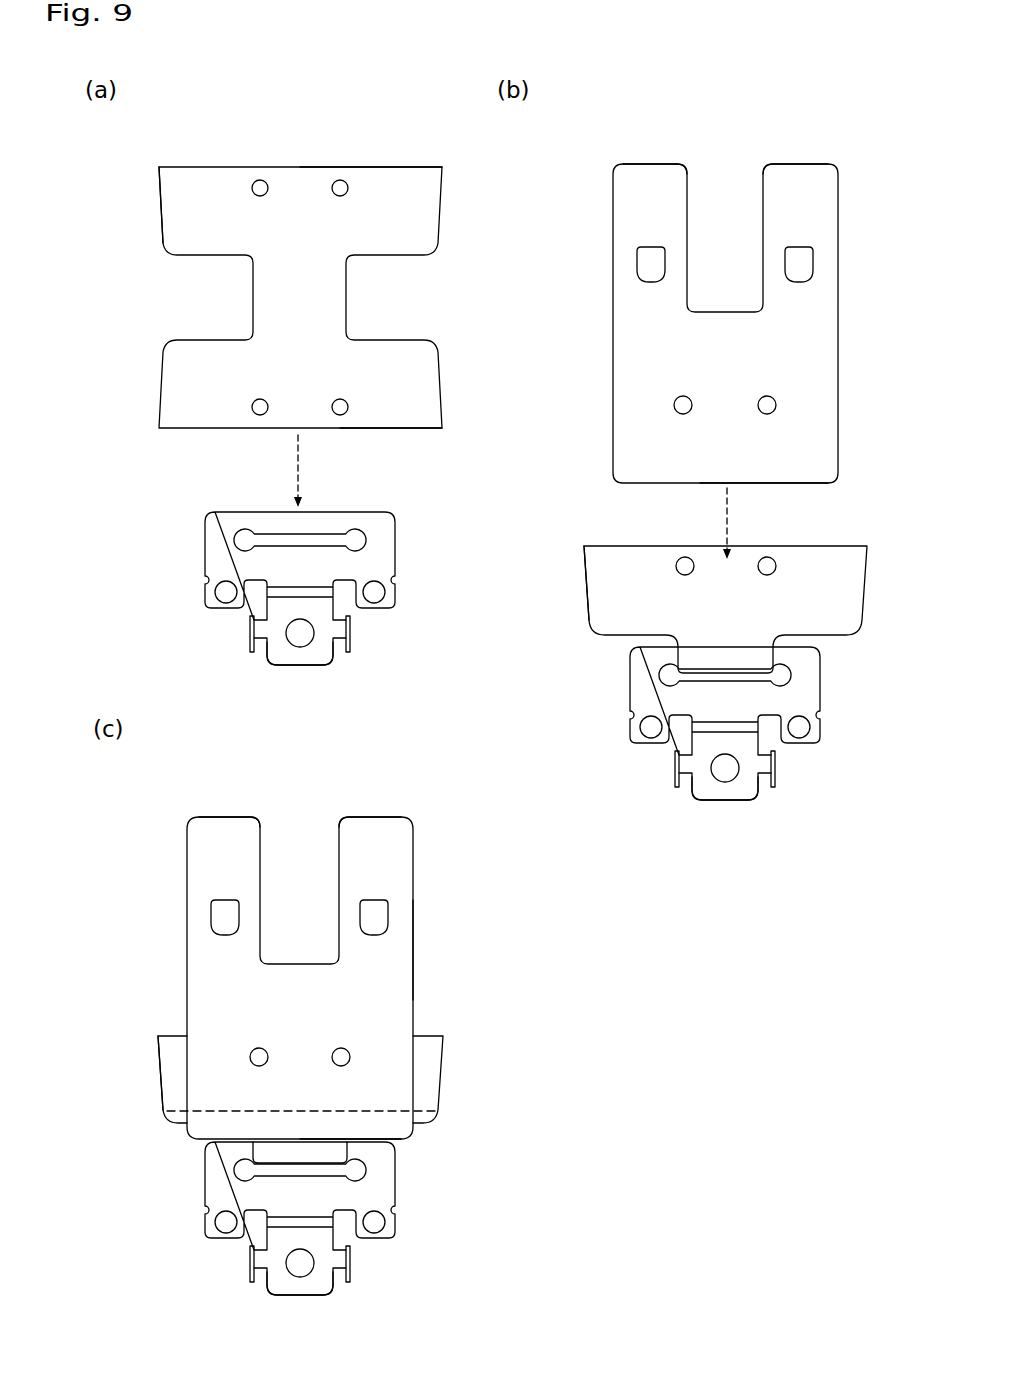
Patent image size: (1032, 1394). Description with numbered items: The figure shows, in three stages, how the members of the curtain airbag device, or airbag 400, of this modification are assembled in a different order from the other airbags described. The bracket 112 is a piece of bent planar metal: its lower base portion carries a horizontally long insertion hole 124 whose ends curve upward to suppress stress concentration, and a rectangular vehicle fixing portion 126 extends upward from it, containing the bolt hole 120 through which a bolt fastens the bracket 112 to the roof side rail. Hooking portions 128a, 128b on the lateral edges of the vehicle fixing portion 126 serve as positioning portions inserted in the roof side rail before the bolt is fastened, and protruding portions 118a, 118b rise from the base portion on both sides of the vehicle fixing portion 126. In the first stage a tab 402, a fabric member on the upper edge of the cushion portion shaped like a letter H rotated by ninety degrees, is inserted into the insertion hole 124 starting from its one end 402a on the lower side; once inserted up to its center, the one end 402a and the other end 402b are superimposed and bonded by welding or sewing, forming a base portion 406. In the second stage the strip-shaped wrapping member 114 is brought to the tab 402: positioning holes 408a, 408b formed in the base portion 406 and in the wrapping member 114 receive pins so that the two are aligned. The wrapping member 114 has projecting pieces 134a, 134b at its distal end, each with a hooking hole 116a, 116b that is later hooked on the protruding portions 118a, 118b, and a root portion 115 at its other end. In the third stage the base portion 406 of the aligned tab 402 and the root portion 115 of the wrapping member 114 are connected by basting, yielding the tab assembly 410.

The airbag 400 is at (146, 180).
The tab 402 is at (386, 166).
The one end 402a is at (390, 430).
The other end 402b is at (347, 166).
The base portion 406 is at (199, 180).
The positioning hole 408a is at (261, 180).
The positioning hole 408b is at (683, 396).
The bracket 112 is at (396, 530).
The wrapping member 114 is at (838, 345).
The root portion 115 is at (813, 463).
The hooking hole 116a is at (655, 252).
The hooking hole 116b is at (803, 252).
The protruding portion 118a is at (206, 588).
The protruding portion 118b is at (396, 589).
The bolt hole 120 is at (295, 640).
The insertion hole 124 is at (340, 535).
The vehicle fixing portion 126 is at (320, 653).
The hooking portion 128a is at (250, 637).
The hooking portion 128b is at (355, 641).
The projecting piece 134a is at (640, 164).
The projecting piece 134b is at (808, 164).
The tab assembly 410 is at (413, 947).